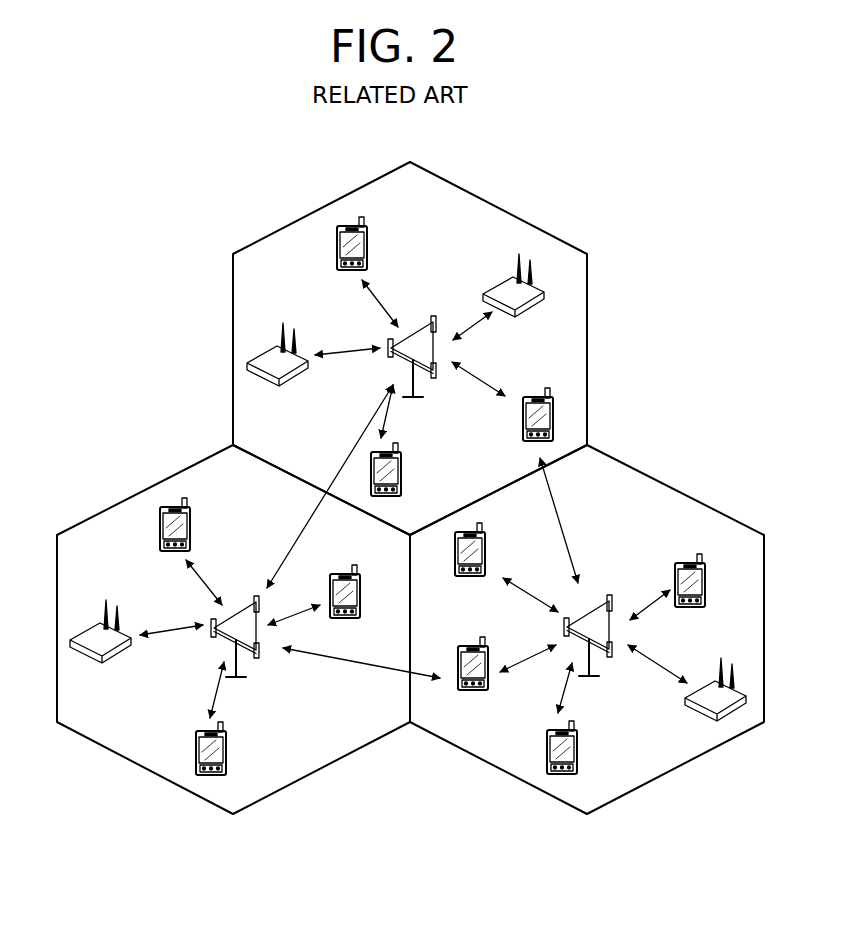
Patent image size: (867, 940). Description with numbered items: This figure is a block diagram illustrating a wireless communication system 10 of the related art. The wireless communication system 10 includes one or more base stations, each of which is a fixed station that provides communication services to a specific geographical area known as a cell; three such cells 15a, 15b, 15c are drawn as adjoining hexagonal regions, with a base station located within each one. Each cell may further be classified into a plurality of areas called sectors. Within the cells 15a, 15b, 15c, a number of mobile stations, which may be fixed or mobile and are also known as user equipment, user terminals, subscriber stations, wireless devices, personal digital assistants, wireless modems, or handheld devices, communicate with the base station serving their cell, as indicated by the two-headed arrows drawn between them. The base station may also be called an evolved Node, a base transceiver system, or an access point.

The wireless communication system 10 is at (662, 259).
The cell 15a is at (587, 340).
The cell 15b is at (698, 497).
The cell 15c is at (120, 503).